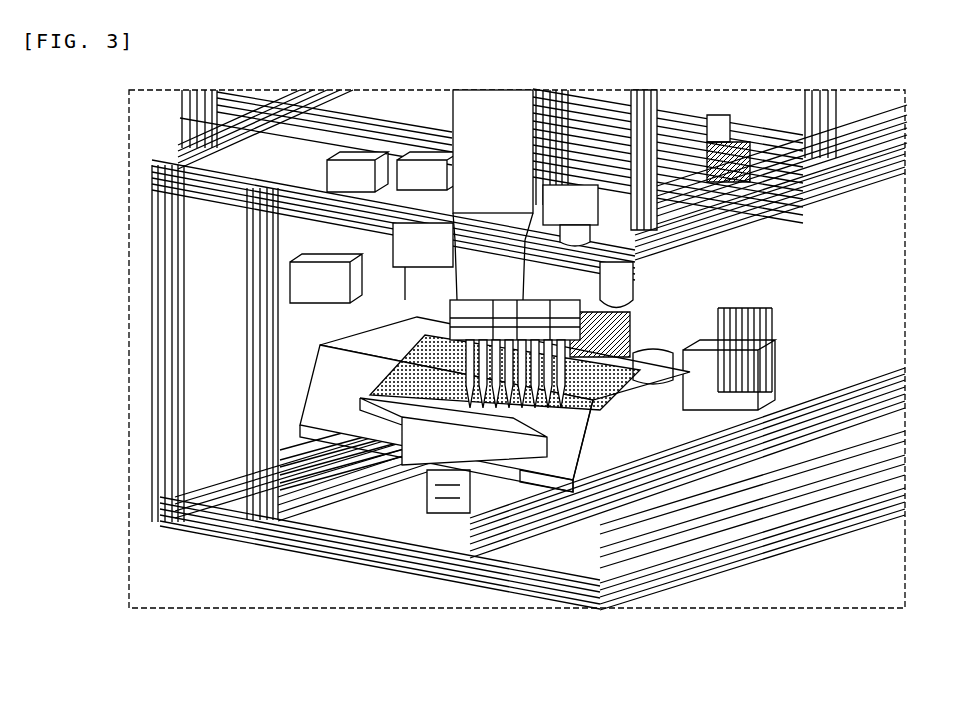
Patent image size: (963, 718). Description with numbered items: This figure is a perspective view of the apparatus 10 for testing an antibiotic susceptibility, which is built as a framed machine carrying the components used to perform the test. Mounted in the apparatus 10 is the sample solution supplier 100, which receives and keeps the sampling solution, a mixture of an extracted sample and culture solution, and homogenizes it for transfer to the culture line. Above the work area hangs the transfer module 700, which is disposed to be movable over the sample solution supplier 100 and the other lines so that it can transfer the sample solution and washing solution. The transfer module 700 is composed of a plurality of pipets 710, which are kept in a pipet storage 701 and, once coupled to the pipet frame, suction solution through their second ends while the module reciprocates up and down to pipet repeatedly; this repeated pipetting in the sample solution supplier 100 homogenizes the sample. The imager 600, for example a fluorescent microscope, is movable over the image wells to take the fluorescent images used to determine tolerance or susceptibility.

The apparatus for testing an antibiotic susceptibility 10 is at (147, 300).
The sample solution supplier 100 is at (505, 555).
The imager 600 is at (598, 420).
The transfer module 700 is at (445, 288).
The pipet storage 701 is at (605, 432).
The pipets 710 is at (455, 350).